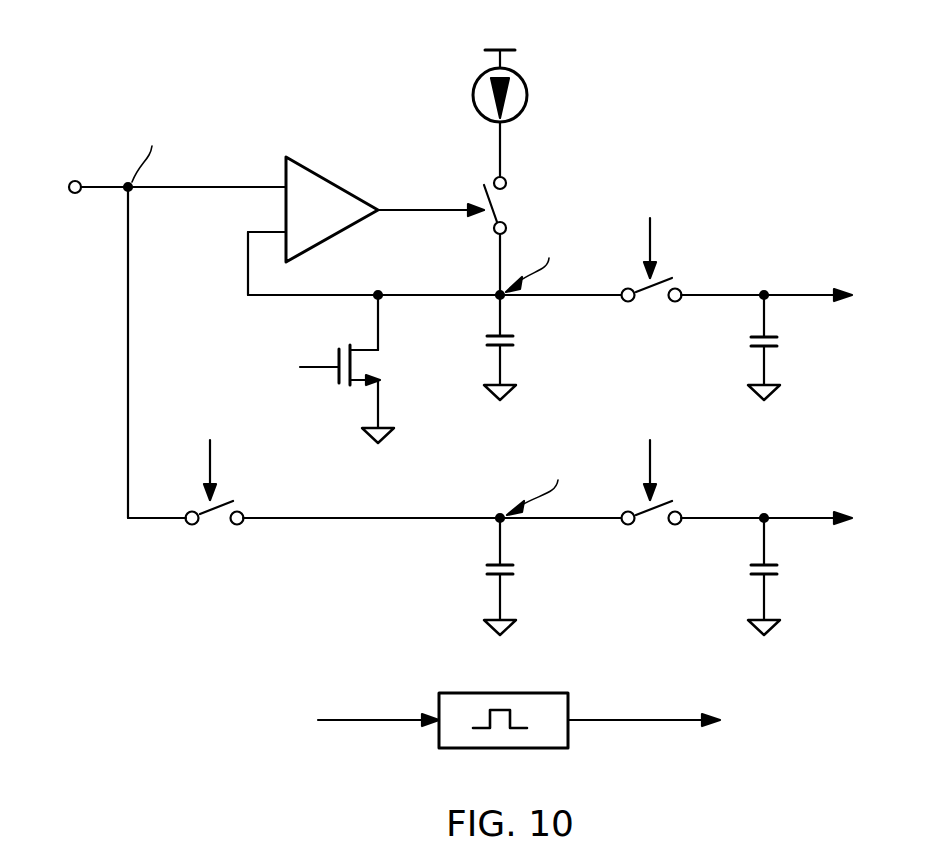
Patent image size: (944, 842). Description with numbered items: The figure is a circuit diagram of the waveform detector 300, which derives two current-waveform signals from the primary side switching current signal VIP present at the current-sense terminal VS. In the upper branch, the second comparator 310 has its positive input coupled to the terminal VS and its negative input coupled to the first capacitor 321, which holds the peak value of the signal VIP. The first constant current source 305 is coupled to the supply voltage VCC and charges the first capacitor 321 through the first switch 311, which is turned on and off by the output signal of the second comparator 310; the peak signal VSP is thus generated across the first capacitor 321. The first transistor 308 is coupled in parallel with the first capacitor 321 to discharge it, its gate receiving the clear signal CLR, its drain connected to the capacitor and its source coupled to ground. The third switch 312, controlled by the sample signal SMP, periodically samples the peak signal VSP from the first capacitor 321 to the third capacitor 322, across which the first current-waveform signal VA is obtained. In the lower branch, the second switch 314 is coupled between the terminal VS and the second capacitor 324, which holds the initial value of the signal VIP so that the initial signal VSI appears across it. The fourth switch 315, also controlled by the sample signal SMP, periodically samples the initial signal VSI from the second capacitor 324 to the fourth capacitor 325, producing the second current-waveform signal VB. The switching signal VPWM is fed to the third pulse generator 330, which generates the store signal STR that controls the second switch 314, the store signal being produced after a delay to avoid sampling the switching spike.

The waveform detector 300 is at (822, 90).
The first constant current source 305 is at (527, 90).
The first transistor 308 is at (347, 390).
The second comparator 310 is at (333, 176).
The first switch 311 is at (486, 220).
The third switch 312 is at (652, 290).
The second switch 314 is at (210, 508).
The fourth switch 315 is at (652, 512).
The first capacitor 321 is at (514, 343).
The third capacitor 322 is at (778, 345).
The second capacitor 324 is at (514, 572).
The fourth capacitor 325 is at (778, 572).
The third pulse generator 330 is at (571, 694).